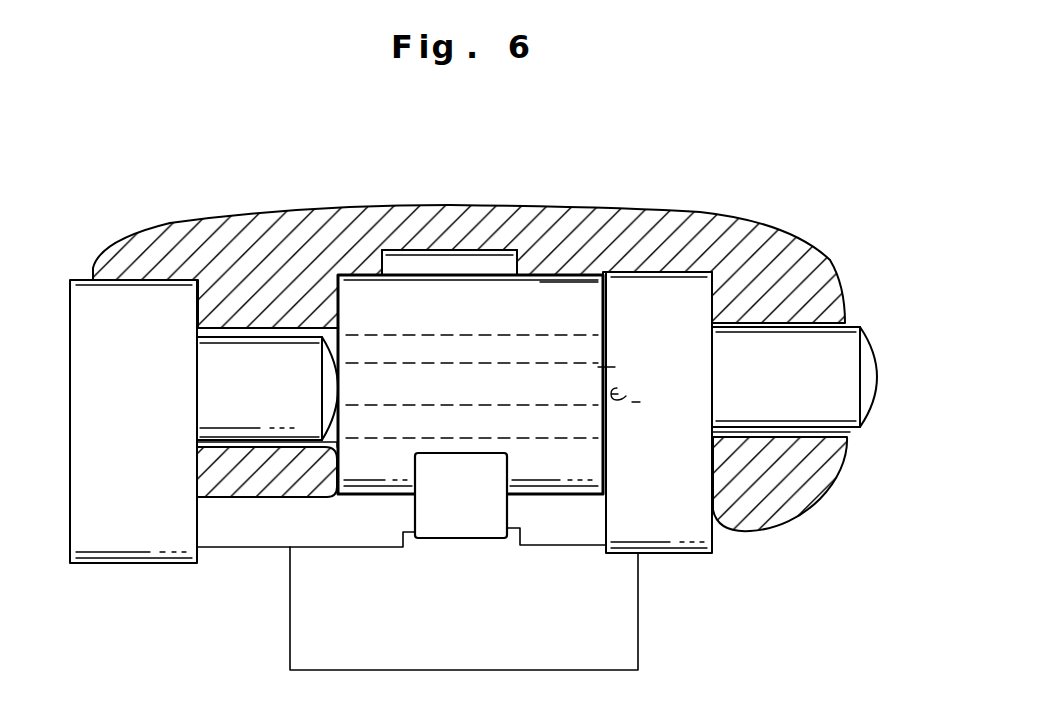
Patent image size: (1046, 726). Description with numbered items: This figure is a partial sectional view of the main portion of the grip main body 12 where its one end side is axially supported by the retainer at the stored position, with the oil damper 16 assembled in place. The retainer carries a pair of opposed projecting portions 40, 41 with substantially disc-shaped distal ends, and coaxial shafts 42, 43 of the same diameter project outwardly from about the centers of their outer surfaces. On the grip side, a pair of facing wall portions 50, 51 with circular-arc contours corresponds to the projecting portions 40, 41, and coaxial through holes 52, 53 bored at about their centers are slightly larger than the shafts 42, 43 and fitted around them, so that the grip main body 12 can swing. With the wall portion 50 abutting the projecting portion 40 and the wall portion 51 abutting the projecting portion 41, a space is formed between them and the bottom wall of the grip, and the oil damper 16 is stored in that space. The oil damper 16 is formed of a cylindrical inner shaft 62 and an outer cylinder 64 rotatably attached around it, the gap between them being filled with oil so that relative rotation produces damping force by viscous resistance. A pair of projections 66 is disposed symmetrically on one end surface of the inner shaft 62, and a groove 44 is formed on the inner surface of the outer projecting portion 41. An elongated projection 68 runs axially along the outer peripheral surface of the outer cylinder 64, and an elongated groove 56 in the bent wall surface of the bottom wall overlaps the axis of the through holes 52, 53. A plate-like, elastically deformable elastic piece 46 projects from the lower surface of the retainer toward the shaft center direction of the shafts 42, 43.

The grip main body 12 is at (527, 204).
The oil damper 16 is at (384, 305).
The projecting portion 40 is at (130, 543).
The projecting portion 41 is at (672, 525).
The shaft 42 is at (259, 353).
The shaft 43 is at (840, 358).
The groove 44 is at (637, 395).
The elastic piece 46 is at (472, 508).
The wall portion 50 is at (218, 487).
The wall portion 51 is at (770, 483).
The through hole 52 is at (258, 447).
The through hole 53 is at (845, 437).
The elongated groove 56 is at (434, 254).
The inner shaft 62 is at (540, 330).
The outer cylinder 64 is at (563, 298).
The projection 66 is at (618, 372).
The elongated projection 68 is at (477, 262).